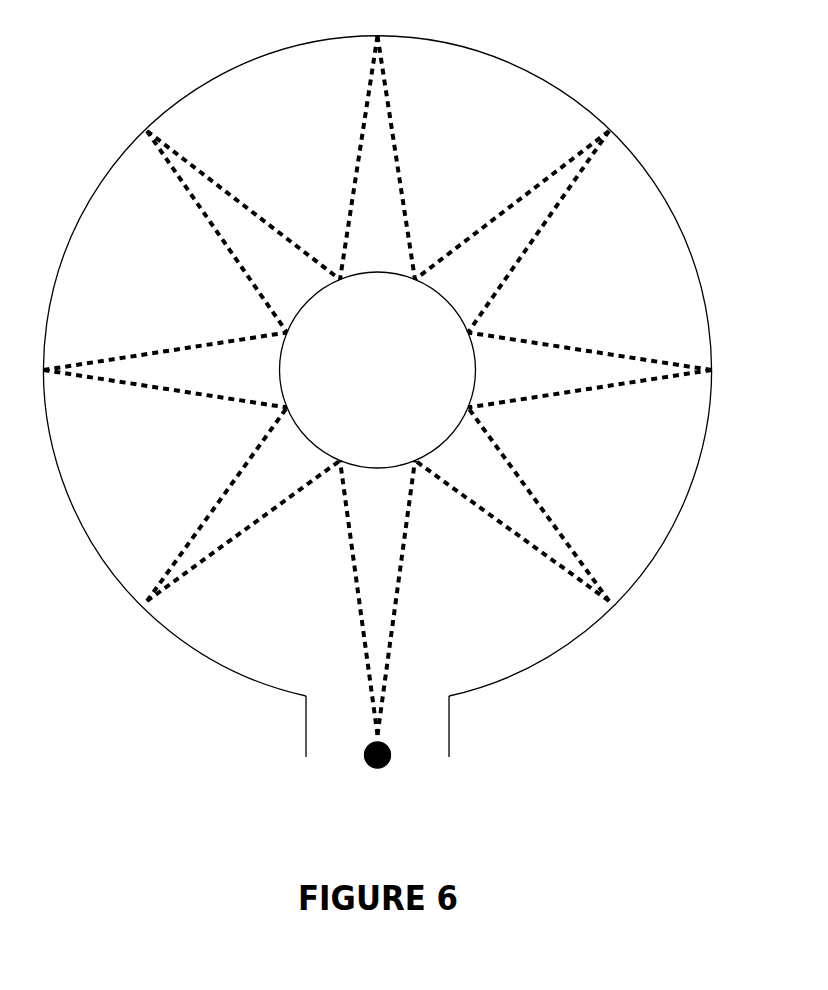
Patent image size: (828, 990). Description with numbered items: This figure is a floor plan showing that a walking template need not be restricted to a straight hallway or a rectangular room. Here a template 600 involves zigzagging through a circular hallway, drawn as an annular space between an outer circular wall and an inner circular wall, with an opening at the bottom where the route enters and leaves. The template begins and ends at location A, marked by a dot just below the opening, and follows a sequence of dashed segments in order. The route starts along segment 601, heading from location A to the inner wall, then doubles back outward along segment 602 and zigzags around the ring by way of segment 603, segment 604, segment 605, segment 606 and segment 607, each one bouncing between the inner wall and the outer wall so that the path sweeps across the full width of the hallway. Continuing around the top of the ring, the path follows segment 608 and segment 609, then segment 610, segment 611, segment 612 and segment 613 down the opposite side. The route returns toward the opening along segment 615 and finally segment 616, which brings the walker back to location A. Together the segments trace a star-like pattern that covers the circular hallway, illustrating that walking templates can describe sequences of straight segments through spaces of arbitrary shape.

The template 600 is at (374, 728).
The segment 601 is at (346, 598).
The segment 602 is at (243, 531).
The segment 603 is at (217, 505).
The segment 604 is at (166, 394).
The segment 605 is at (166, 346).
The segment 606 is at (217, 232).
The segment 607 is at (243, 205).
The segment 608 is at (349, 158).
The segment 609 is at (408, 158).
The segment 610 is at (512, 205).
The segment 611 is at (538, 232).
The segment 612 is at (590, 346).
The segment 613 is at (590, 394).
The segment 615 is at (512, 505).
The segment 616 is at (414, 598).